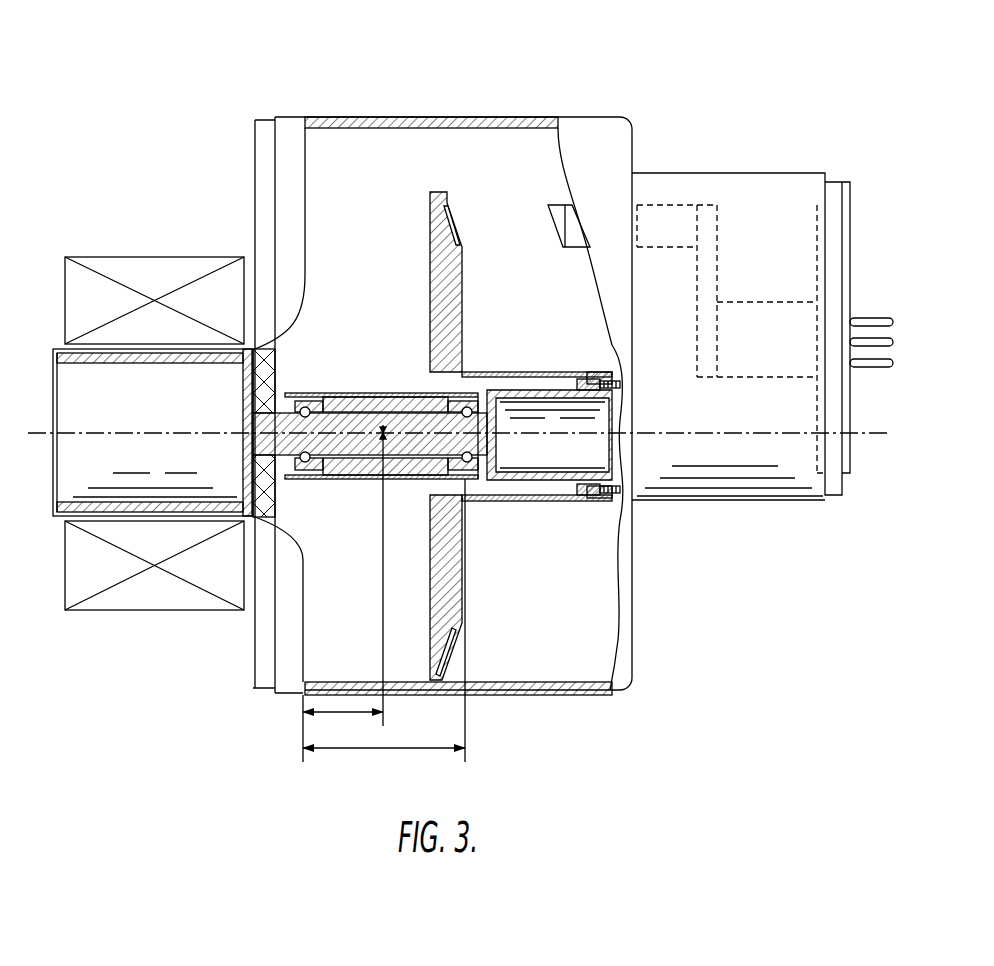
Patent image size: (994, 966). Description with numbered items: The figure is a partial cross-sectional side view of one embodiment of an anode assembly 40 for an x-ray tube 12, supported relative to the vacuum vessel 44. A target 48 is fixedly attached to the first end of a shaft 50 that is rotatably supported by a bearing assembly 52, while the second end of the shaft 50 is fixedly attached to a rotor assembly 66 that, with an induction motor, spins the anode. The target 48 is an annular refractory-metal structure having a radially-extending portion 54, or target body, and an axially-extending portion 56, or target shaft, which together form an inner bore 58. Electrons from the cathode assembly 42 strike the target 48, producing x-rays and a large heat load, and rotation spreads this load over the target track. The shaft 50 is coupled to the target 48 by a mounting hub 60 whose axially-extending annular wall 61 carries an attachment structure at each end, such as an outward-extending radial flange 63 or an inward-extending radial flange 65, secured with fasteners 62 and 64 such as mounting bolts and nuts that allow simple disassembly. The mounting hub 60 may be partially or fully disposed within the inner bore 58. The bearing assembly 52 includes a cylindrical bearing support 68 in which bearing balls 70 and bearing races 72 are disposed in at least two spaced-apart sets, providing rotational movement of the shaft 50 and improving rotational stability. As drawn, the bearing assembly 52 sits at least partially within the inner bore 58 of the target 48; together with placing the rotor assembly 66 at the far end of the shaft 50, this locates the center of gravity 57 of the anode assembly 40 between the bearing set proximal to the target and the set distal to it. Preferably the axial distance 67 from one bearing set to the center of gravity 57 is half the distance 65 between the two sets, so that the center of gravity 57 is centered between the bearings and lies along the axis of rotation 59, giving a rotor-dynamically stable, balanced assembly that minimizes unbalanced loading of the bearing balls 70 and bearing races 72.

The x-ray tube 12 is at (540, 90).
The anode assembly 40 is at (385, 190).
The cathode assembly 42 is at (716, 220).
The vacuum vessel 44 is at (626, 632).
The target 48 is at (470, 226).
The shaft 50 is at (358, 479).
The bearing assembly 52 is at (398, 486).
The radially-extending portion 54 is at (448, 305).
The axially-extending portion 56 is at (505, 372).
The center of gravity 57 is at (403, 396).
The inner bore 58 is at (523, 390).
The axis of rotation 59 is at (873, 445).
The mounting hub 60 is at (538, 501).
The annular wall 61 is at (562, 386).
The fastener 62 is at (622, 386).
The outward-extending radial flange 63 is at (603, 500).
The fastener 64 is at (500, 435).
The inward-extending radial flange 65 is at (390, 750).
The rotor assembly 66 is at (53, 472).
The axial distance from one set of bearings to the center of gravity 67 is at (325, 713).
The bearing support 68 is at (381, 396).
The bearing balls 70 is at (304, 394).
The bearing races 72 is at (322, 393).